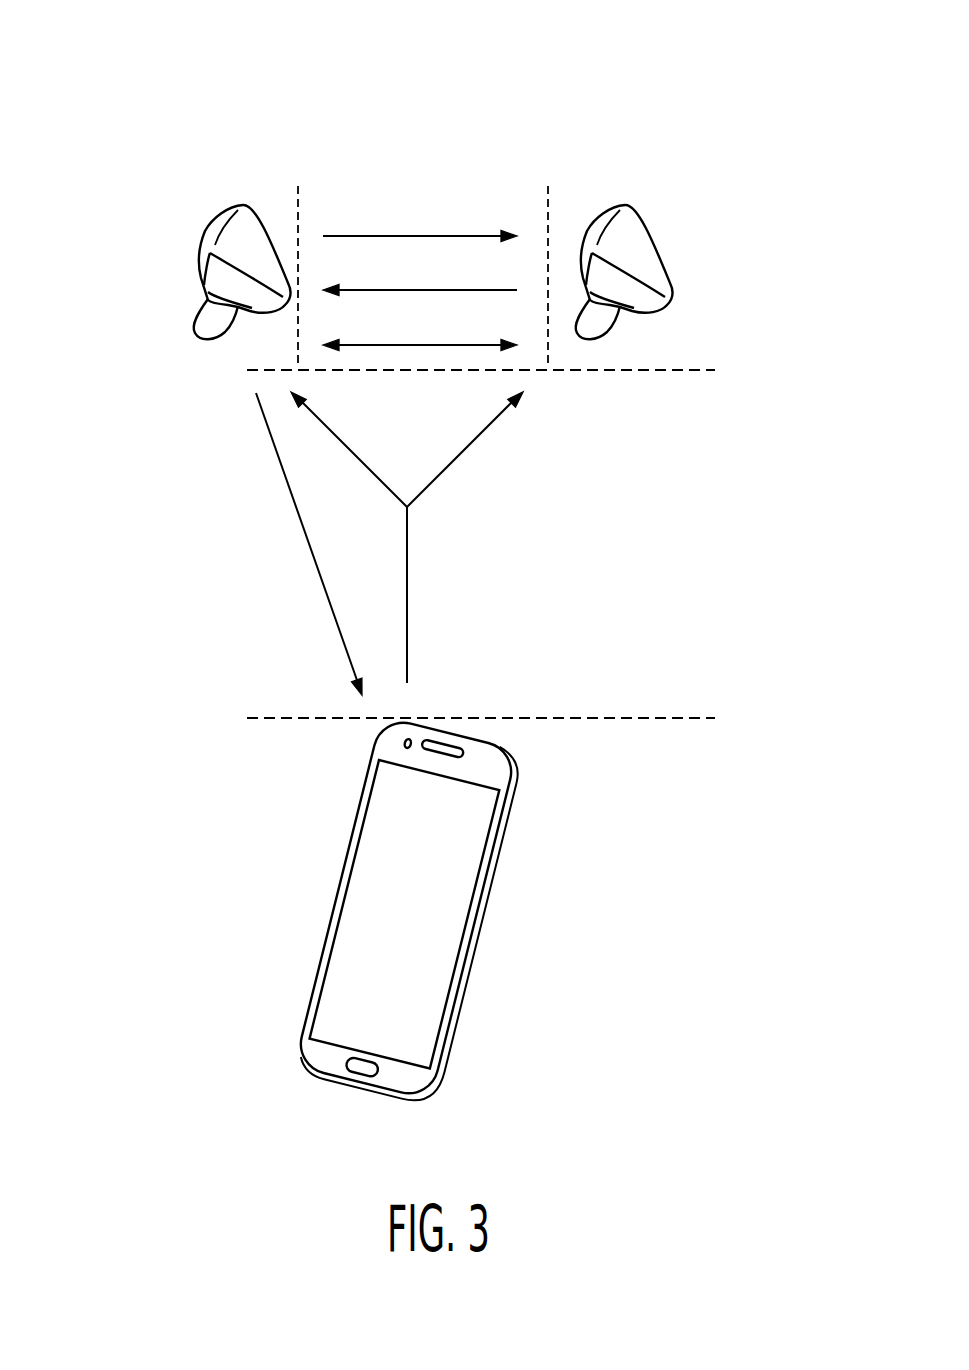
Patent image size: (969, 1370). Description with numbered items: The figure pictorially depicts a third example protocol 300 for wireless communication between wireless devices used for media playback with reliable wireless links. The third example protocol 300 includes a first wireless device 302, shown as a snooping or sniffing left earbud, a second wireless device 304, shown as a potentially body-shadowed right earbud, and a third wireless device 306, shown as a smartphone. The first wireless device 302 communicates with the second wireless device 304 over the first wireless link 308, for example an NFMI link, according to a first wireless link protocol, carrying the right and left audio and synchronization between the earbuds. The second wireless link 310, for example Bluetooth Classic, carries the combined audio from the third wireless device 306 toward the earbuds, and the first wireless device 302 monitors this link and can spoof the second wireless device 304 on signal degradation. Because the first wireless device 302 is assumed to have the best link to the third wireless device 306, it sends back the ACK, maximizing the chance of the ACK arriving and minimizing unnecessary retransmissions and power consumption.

The third example protocol 300 is at (122, 101).
The first wireless device 302 is at (200, 249).
The second wireless device 304 is at (660, 250).
The third wireless device 306 is at (462, 978).
The first wireless link 308 is at (548, 178).
The second wireless link 310 is at (715, 370).